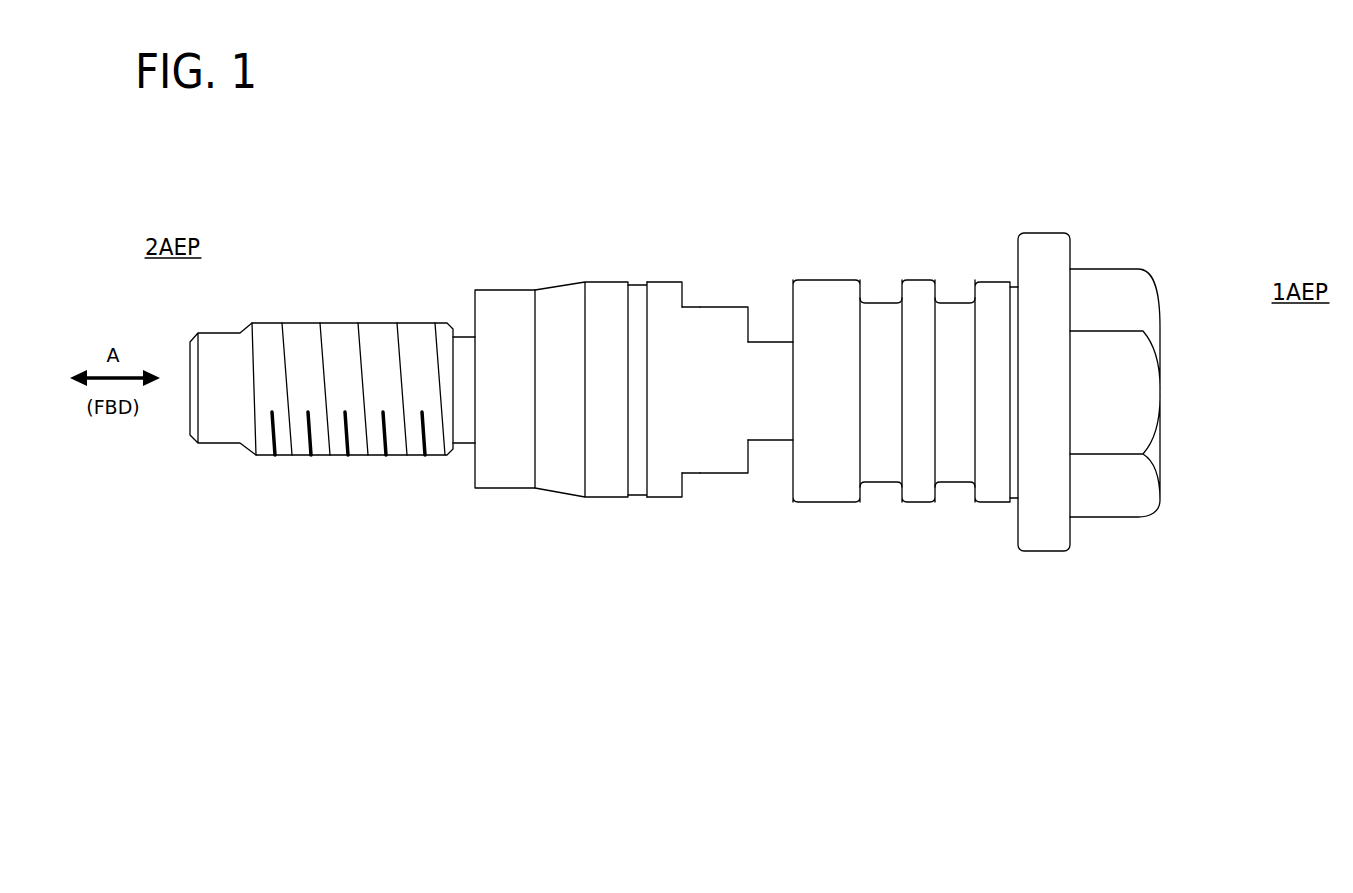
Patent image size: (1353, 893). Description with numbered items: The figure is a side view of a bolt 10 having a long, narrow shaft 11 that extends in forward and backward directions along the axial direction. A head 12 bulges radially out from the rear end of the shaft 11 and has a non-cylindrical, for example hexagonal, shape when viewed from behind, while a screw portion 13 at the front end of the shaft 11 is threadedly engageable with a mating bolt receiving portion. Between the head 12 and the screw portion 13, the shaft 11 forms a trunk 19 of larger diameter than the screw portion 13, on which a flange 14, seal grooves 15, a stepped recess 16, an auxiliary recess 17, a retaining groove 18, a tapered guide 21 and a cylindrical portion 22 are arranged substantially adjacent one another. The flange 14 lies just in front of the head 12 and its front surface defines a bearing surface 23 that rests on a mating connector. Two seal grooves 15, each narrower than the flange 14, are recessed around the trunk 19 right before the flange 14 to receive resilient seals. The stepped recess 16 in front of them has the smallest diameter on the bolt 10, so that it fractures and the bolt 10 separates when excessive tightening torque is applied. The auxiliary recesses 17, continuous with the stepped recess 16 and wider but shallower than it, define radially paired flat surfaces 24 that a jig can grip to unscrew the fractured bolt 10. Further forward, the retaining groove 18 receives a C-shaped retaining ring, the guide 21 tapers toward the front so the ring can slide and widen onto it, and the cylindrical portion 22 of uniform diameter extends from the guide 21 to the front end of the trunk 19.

The bolt 10 is at (1160, 373).
The shaft 11 is at (666, 498).
The head 12 is at (1113, 275).
The screw portion 13 is at (345, 333).
The flange 14 is at (1045, 243).
The seal grooves 15 is at (882, 310).
The stepped recess 16 is at (771, 348).
The auxiliary recesses 17 is at (727, 317).
The retaining groove 18 is at (637, 292).
The trunk 19 is at (826, 423).
The guide 21 is at (556, 293).
The cylindrical portion 22 is at (502, 295).
The bearing surface 23 is at (1018, 244).
The flat surfaces 24 is at (697, 307).